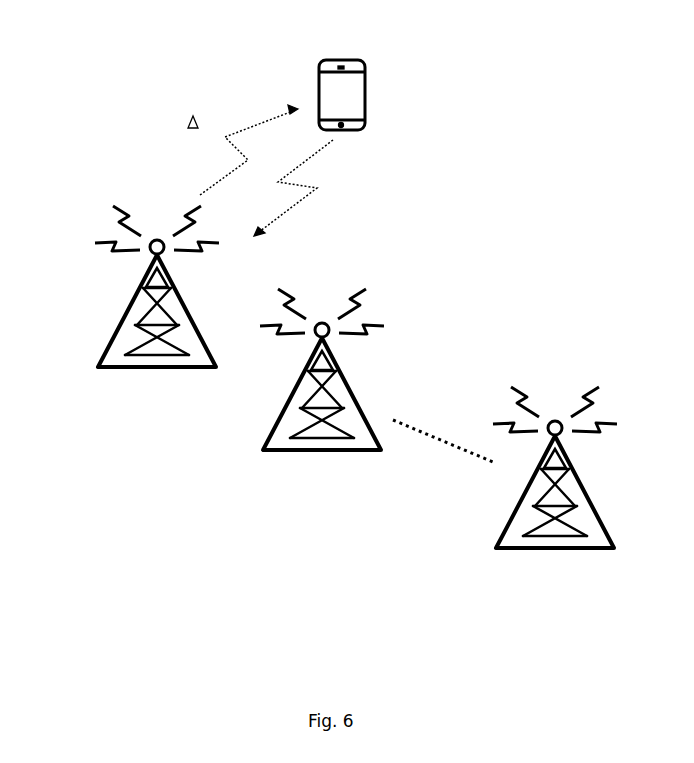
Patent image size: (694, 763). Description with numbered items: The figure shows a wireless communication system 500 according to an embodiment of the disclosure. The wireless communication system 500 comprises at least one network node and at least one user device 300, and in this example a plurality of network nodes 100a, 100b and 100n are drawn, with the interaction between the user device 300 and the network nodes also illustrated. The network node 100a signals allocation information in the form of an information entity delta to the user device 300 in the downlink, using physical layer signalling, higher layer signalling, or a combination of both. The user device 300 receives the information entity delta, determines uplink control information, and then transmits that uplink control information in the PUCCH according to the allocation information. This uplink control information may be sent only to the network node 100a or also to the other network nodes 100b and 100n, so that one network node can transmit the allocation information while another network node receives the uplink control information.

The wireless communication system 500 is at (126, 48).
The user device 300 is at (368, 90).
The network node 100a is at (108, 348).
The network node 100b is at (272, 432).
The network node 100n is at (503, 535).